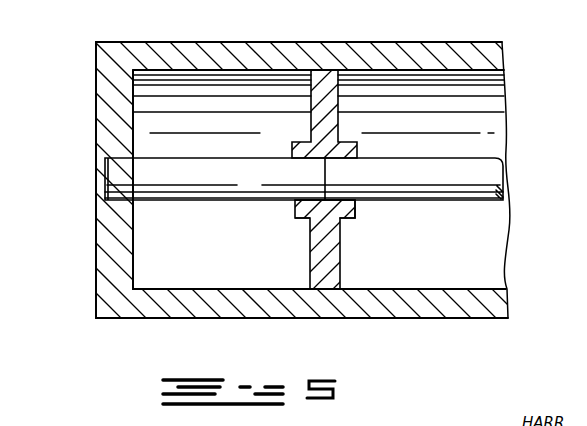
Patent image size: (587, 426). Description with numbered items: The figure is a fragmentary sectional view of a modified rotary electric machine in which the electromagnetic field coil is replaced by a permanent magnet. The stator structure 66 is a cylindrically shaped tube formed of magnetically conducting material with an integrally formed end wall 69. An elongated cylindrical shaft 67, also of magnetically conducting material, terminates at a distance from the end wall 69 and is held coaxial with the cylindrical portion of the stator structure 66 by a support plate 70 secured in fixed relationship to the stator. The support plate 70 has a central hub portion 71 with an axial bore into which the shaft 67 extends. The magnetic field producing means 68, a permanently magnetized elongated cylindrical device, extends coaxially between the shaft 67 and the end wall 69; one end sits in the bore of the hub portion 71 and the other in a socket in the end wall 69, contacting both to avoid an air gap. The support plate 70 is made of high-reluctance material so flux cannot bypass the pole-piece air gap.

The stator structure 66 is at (400, 48).
The elongated cylindrical shaft 67 is at (438, 192).
The magnetic field producing means 68 is at (223, 193).
The end wall 69 is at (105, 123).
The support plate 70 is at (333, 265).
The central hub portion 71 is at (301, 214).